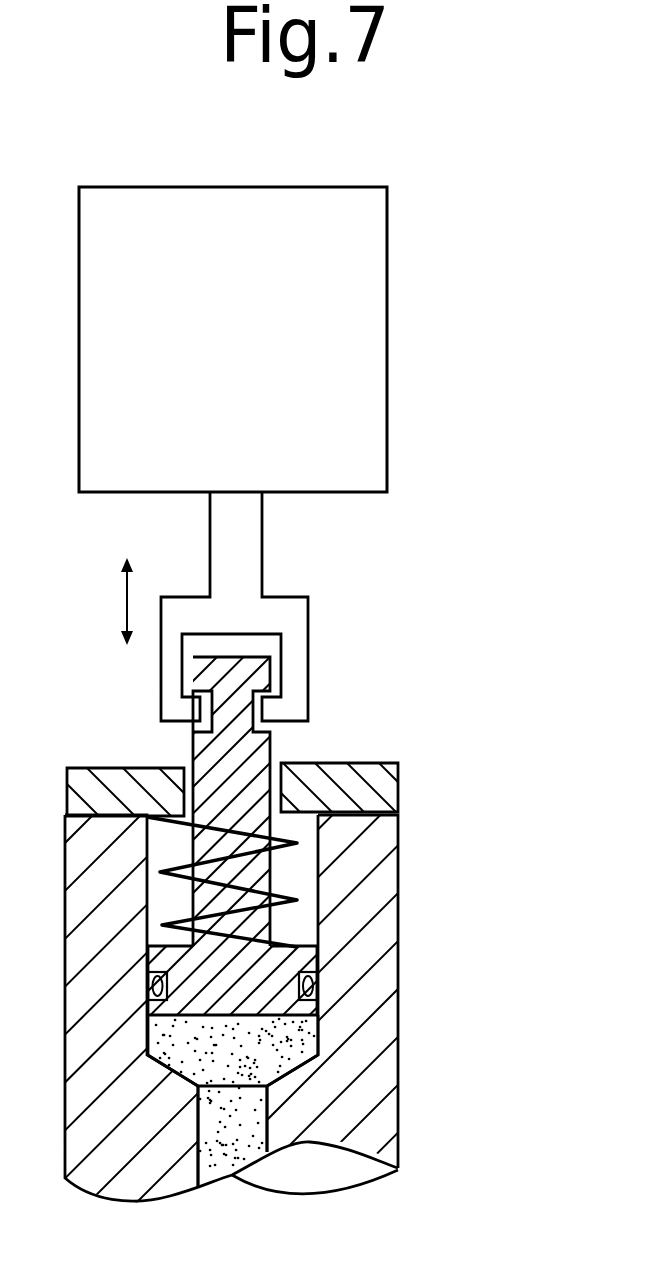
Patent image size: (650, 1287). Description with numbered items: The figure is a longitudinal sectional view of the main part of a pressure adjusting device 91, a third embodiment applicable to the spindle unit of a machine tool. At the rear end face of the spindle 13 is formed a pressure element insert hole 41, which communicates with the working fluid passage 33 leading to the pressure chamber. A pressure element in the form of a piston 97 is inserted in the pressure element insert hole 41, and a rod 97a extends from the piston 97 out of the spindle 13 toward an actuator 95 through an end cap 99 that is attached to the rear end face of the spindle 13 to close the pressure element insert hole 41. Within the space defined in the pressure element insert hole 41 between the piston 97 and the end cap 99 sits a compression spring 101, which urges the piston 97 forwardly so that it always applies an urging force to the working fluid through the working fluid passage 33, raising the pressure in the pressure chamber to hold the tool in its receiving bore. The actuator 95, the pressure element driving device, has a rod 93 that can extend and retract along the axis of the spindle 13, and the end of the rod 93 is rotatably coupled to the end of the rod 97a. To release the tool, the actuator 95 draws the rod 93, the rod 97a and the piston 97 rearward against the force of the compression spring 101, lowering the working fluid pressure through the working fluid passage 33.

The actuator 95 is at (387, 307).
The rod 93 is at (262, 547).
The pressure adjusting device 91 is at (443, 650).
The rod 97a is at (271, 750).
The piston 97 is at (277, 963).
The end cap 99 is at (398, 790).
The compression spring 101 is at (282, 852).
The spindle 13 is at (387, 987).
The pressure element insert hole 41 is at (323, 1043).
The working fluid passage 33 is at (245, 1115).